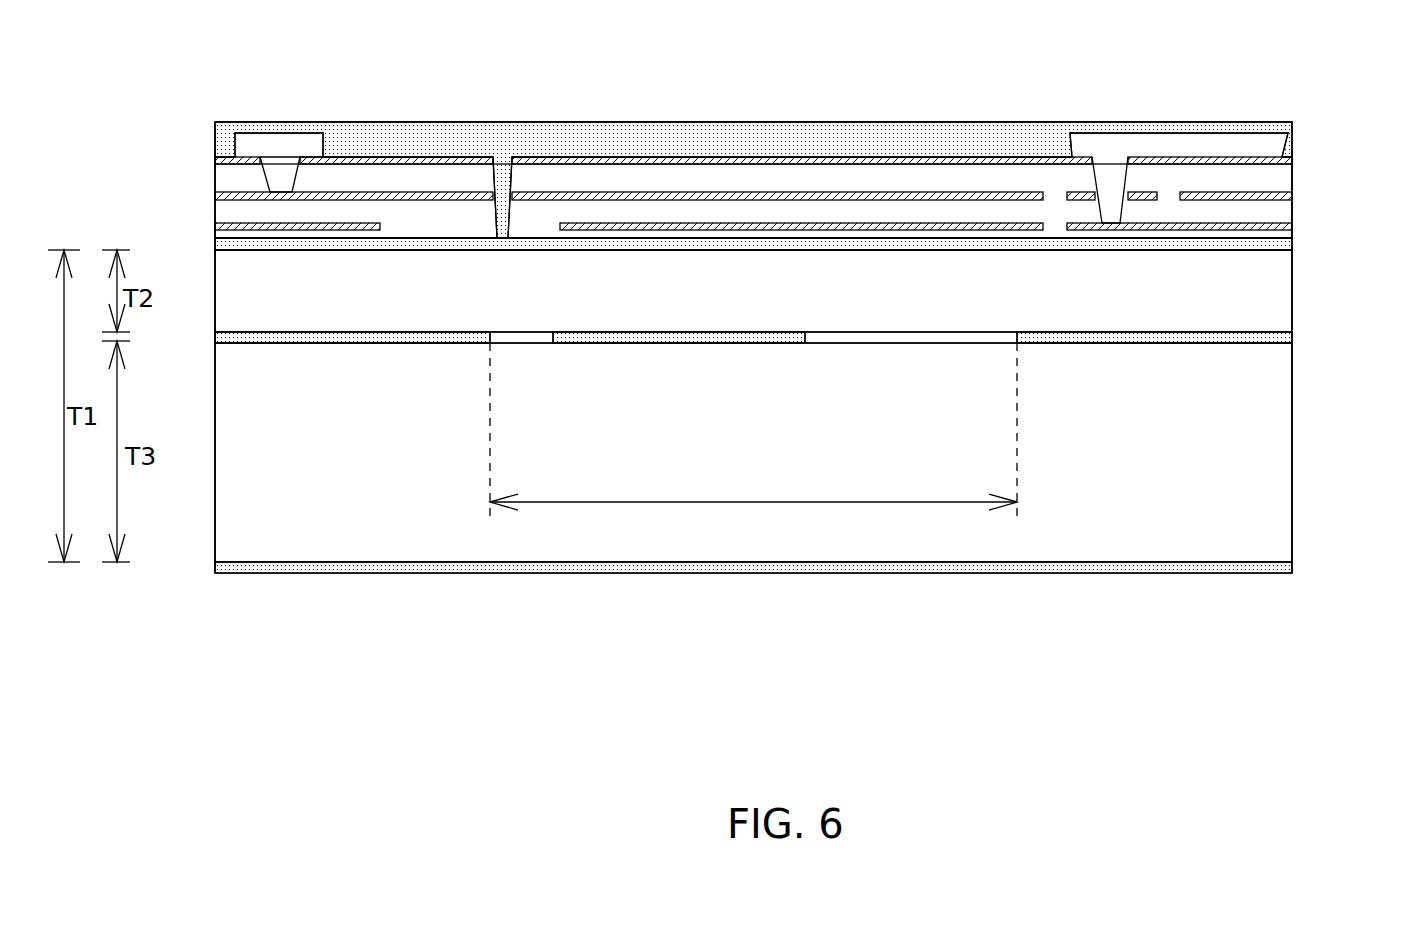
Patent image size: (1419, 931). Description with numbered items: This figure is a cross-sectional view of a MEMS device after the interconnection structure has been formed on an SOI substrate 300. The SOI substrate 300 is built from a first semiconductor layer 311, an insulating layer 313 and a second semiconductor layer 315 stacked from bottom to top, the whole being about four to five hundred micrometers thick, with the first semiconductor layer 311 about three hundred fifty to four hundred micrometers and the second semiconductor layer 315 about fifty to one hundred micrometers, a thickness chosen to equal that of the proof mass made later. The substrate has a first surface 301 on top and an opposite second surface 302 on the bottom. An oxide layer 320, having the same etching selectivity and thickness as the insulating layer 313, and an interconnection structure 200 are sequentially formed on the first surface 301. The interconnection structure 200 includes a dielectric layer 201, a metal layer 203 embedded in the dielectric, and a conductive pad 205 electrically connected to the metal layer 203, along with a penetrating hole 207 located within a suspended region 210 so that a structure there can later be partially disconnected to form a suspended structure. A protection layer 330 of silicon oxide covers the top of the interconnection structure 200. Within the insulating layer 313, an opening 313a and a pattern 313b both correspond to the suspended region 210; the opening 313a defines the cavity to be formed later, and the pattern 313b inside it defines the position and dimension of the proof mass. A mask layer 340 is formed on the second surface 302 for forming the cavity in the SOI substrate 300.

The interconnection structure 200 is at (140, 123).
The dielectric layer 201 is at (1283, 178).
The metal layer 203 is at (1292, 160).
The conductive pad 205 is at (1113, 160).
The penetrating hole 207 is at (503, 165).
The suspended region 210 is at (452, 83).
The SOI substrate 300 is at (1360, 573).
The first surface 301 is at (260, 251).
The second surface 302 is at (1240, 562).
The first semiconductor layer 311 is at (358, 466).
The insulating layer 313 is at (225, 337).
The opening 313a is at (753, 441).
The pattern 313b is at (738, 343).
The second semiconductor layer 315 is at (358, 304).
The oxide layer 320 is at (1292, 245).
The protection layer 330 is at (1293, 143).
The mask layer 340 is at (1292, 567).